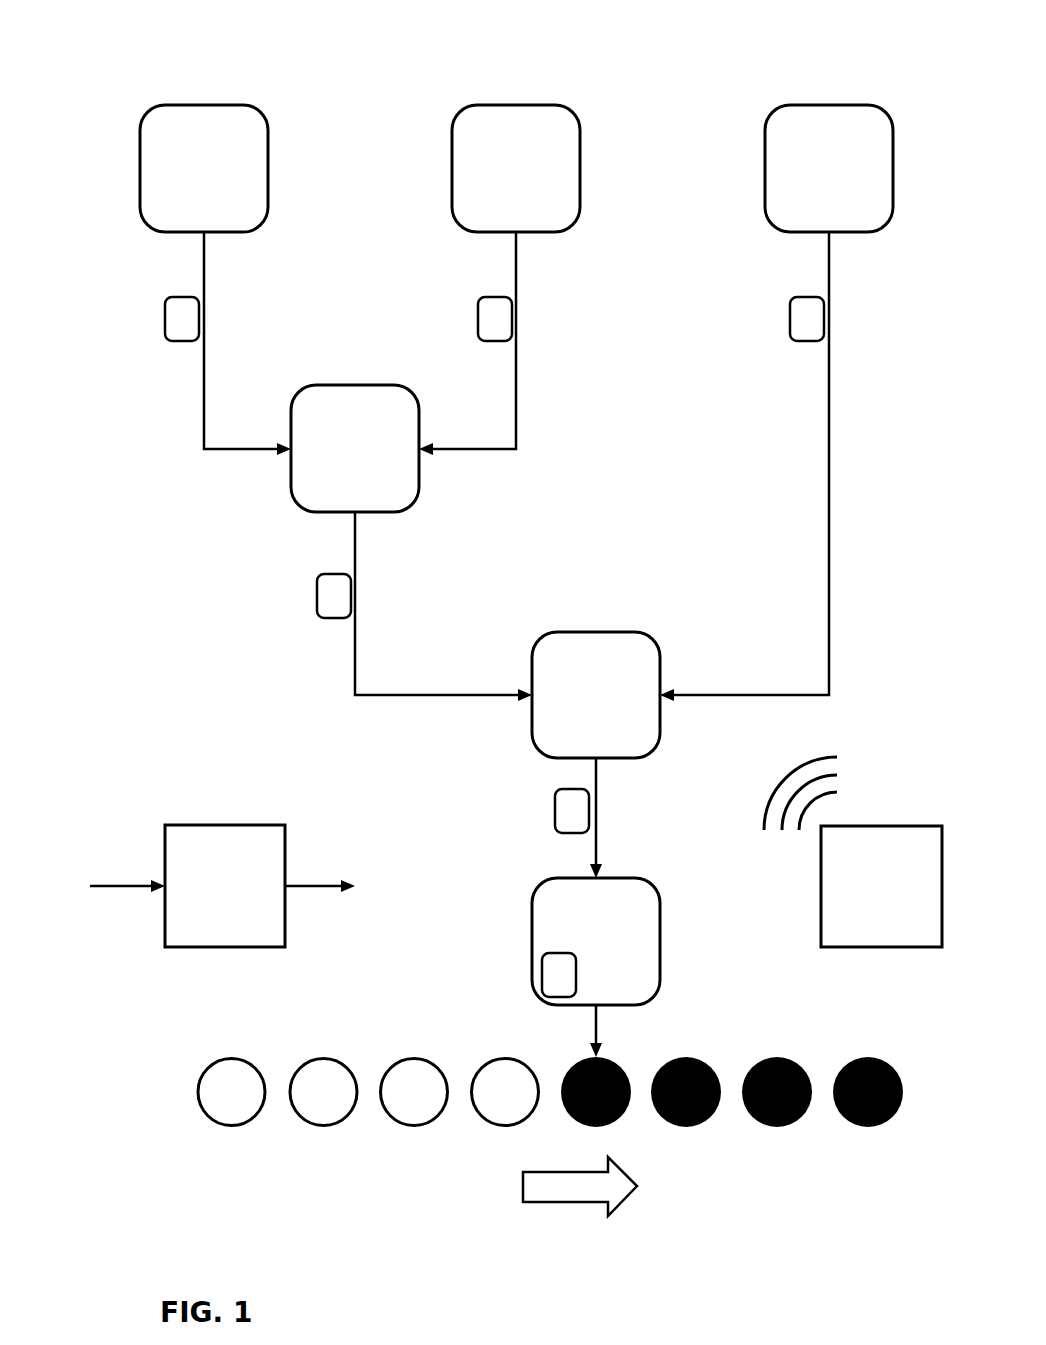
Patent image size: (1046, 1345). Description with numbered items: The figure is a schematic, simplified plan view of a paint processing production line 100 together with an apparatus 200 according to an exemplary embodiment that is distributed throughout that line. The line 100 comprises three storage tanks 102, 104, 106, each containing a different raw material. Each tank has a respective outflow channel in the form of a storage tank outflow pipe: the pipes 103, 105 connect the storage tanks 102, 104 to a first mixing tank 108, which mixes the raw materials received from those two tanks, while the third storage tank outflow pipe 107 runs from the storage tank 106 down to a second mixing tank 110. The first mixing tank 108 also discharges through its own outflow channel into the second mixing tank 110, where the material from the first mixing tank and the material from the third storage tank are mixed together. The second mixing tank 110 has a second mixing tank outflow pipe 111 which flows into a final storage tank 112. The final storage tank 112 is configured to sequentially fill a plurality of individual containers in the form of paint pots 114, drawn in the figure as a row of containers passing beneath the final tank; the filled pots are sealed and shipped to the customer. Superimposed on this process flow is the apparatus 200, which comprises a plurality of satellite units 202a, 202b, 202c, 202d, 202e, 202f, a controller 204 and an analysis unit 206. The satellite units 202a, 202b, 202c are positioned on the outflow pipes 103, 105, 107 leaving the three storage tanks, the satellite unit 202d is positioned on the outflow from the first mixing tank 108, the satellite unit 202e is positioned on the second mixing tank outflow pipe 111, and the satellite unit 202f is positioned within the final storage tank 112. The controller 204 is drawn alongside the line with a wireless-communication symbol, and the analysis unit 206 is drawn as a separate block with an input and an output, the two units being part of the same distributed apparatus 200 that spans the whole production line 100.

The paint processing production line 100 is at (113, 78).
The apparatus 200 is at (499, 608).
The storage tank 102 is at (204, 168).
The storage tank 104 is at (516, 168).
The storage tank 106 is at (829, 168).
The first mixing tank 108 is at (355, 448).
The second mixing tank 110 is at (596, 695).
The final storage tank 112 is at (596, 941).
The storage tank outflow pipe 103 is at (205, 369).
The storage tank outflow pipe 105 is at (516, 369).
The storage tank outflow pipe 107 is at (829, 369).
The second mixing tank outflow pipe 111 is at (596, 840).
The paint pots 114 is at (229, 1115).
The satellite unit 202a is at (176, 321).
The satellite unit 202b is at (489, 321).
The satellite unit 202c is at (801, 321).
The satellite unit 202d is at (328, 598).
The satellite unit 202e is at (566, 813).
The satellite unit 202f is at (555, 977).
The controller 204 is at (853, 852).
The analysis unit 206 is at (222, 886).